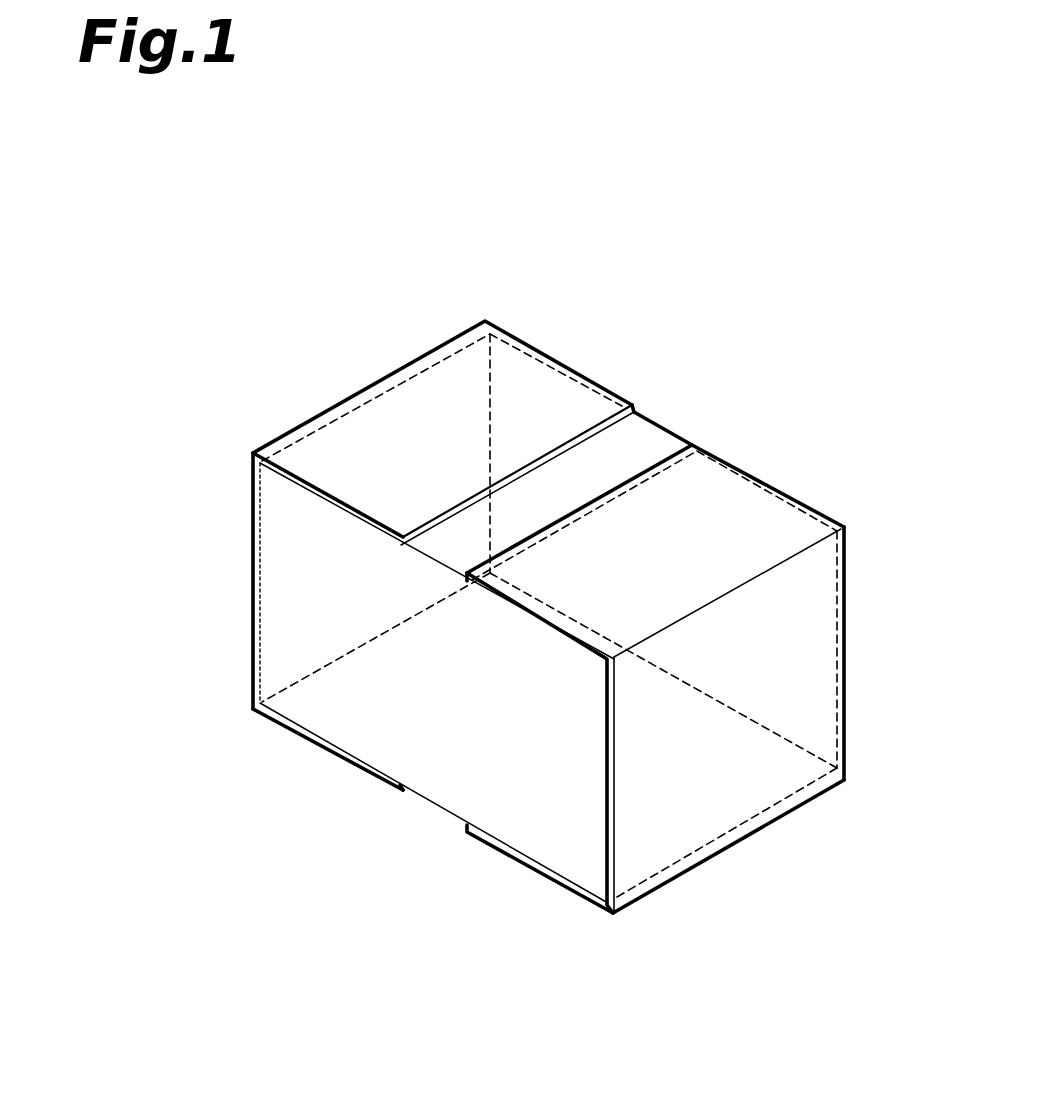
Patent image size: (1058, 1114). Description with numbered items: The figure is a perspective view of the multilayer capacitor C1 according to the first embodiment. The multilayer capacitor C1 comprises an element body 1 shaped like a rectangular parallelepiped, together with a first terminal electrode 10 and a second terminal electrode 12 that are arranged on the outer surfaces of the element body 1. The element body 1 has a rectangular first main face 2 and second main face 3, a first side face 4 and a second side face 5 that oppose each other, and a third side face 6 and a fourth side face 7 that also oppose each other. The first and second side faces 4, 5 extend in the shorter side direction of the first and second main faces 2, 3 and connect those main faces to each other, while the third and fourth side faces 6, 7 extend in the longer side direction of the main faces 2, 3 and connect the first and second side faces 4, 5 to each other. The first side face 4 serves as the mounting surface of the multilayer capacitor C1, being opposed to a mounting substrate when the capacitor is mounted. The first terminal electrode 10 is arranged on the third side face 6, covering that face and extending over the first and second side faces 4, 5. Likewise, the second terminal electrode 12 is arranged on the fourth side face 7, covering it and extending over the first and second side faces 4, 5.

The multilayer capacitor C1 is at (562, 588).
The element body 1 is at (550, 623).
The first main face 2 is at (410, 574).
The second main face 3 is at (695, 650).
The first side face 4 is at (445, 768).
The second side face 5 is at (557, 482).
The third side face 6 is at (272, 556).
The fourth side face 7 is at (822, 720).
The first terminal electrode 10 is at (344, 401).
The second terminal electrode 12 is at (826, 634).